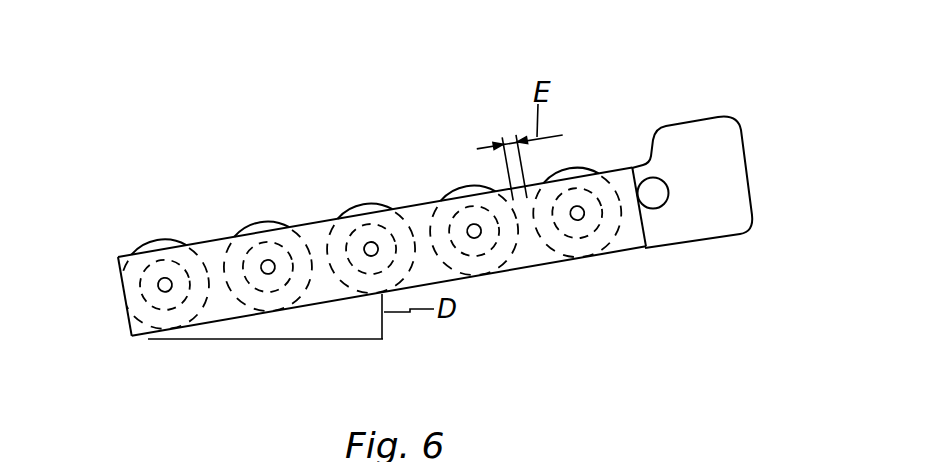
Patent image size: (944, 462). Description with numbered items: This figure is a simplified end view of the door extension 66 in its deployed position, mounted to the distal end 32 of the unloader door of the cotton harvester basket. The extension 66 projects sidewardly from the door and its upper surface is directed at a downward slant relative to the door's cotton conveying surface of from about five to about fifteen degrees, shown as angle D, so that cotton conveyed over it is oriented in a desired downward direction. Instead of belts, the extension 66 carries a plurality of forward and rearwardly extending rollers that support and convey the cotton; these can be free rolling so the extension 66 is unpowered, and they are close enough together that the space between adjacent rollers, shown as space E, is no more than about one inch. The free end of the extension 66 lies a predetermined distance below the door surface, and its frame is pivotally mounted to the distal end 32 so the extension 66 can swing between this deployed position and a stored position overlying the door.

The distal end 32 is at (683, 120).
The door extension 66 is at (124, 340).